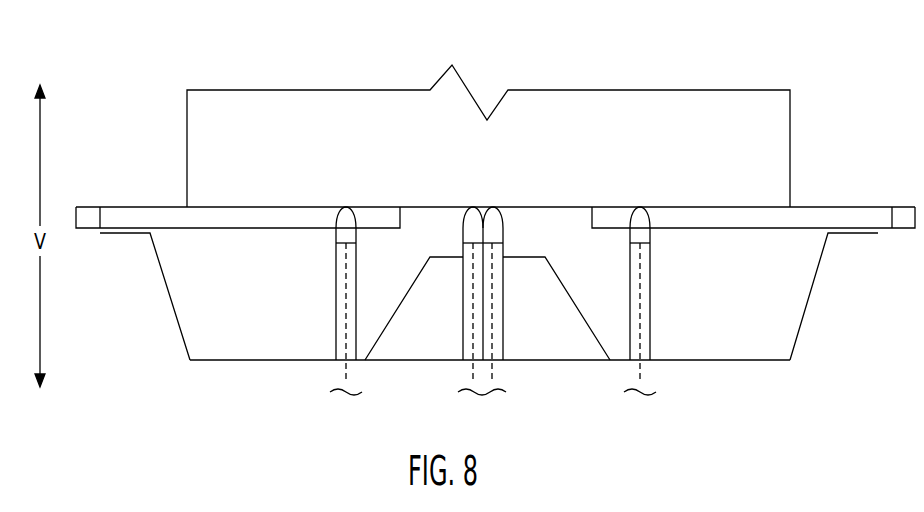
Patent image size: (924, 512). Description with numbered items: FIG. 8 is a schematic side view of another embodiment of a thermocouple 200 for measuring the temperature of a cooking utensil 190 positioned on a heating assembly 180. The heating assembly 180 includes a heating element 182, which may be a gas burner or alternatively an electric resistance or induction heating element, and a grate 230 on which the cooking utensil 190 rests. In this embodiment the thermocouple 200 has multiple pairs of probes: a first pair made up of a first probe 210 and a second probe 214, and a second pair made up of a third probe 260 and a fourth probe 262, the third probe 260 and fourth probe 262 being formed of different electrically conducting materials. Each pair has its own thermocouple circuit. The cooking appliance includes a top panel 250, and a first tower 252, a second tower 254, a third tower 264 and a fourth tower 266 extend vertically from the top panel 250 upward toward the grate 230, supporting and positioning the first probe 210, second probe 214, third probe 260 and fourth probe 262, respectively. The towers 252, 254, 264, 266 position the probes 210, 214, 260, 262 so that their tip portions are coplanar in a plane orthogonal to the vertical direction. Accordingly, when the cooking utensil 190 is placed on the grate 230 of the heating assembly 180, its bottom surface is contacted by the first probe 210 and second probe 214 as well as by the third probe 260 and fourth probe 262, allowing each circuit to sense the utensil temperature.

The cooking utensil 190 is at (725, 112).
The grate 230 is at (151, 194).
The thermocouple 200 is at (548, 224).
The first probe 210 is at (313, 268).
The first tower 252 is at (335, 287).
The third probe 260 is at (463, 222).
The fourth probe 262 is at (502, 223).
The third tower 264 is at (463, 308).
The fourth tower 266 is at (485, 246).
The second probe 214 is at (681, 273).
The second tower 254 is at (650, 292).
The heating assembly 180 is at (674, 333).
The heating element 182 is at (567, 340).
The top panel 250 is at (244, 354).